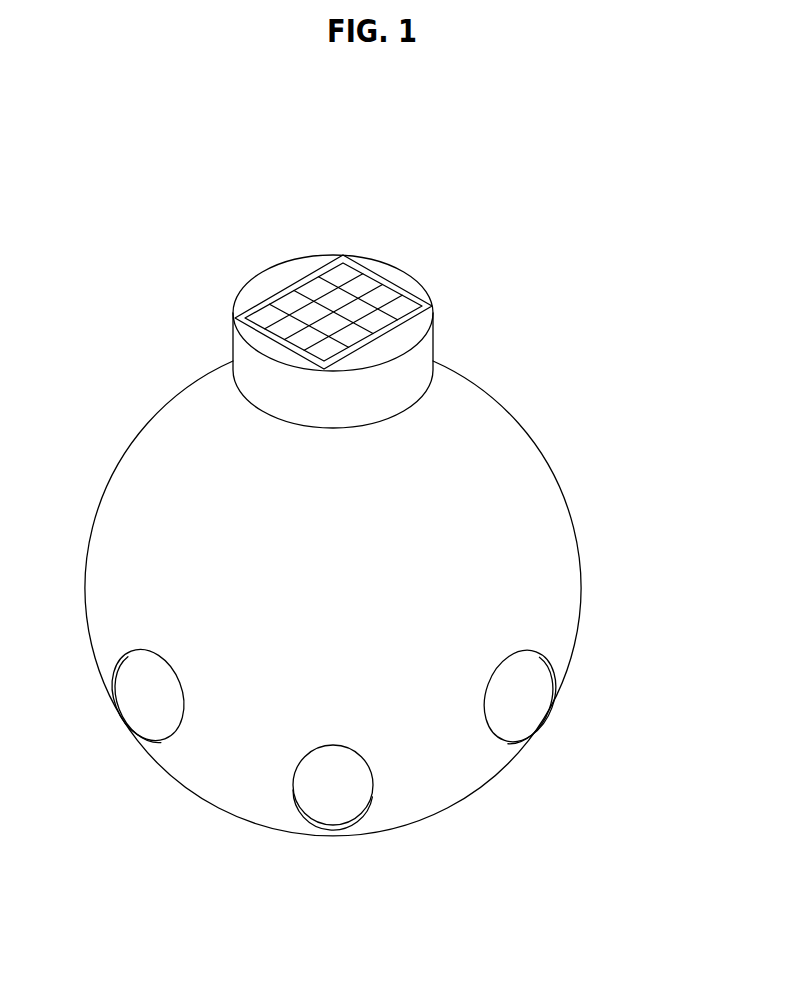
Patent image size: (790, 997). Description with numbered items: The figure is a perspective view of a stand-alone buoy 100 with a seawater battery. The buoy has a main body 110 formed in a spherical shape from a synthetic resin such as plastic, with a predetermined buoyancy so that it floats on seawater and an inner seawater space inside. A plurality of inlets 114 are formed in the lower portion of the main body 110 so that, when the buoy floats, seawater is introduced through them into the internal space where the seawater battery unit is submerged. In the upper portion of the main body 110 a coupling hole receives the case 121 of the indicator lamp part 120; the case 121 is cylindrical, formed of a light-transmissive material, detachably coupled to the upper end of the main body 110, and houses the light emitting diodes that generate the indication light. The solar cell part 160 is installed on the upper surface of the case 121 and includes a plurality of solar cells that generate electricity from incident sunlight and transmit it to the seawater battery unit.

The stand-alone buoy 100 is at (415, 198).
The main body 110 is at (510, 467).
The inlet 114 is at (548, 663).
The indicator lamp part 120 is at (206, 304).
The case 121 is at (243, 287).
The solar cell part 160 is at (318, 296).